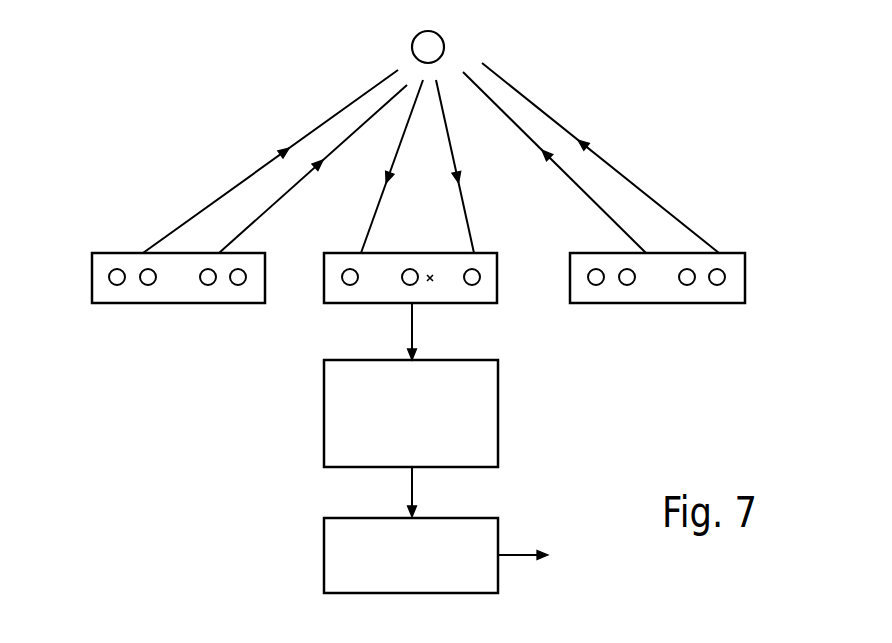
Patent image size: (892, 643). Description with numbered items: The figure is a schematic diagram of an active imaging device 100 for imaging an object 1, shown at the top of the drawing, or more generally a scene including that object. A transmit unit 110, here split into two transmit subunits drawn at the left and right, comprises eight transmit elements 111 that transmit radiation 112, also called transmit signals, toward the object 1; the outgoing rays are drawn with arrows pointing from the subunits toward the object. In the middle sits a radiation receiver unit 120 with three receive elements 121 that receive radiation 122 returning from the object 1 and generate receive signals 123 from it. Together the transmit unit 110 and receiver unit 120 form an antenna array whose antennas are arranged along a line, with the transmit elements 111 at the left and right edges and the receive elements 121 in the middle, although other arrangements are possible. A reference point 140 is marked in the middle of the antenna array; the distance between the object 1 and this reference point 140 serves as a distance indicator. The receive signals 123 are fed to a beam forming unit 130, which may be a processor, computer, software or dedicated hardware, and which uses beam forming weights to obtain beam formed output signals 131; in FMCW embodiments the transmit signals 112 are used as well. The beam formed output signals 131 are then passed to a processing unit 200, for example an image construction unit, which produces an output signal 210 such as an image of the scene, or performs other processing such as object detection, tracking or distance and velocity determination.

The object 1 is at (444, 44).
The active imaging device 100 is at (682, 50).
The transmit unit 110 is at (100, 304).
The transmit elements 111 is at (148, 285).
The radiation 112 is at (357, 128).
The radiation receiver unit 120 is at (323, 295).
The receive elements 121 is at (410, 285).
The radiation 122 is at (460, 197).
The receive signals 123 is at (412, 322).
The beam forming unit 130 is at (324, 417).
The beam formed output signals 131 is at (412, 485).
The reference point 140 is at (434, 281).
The processing unit 200 is at (324, 552).
The output signal 210 is at (523, 558).